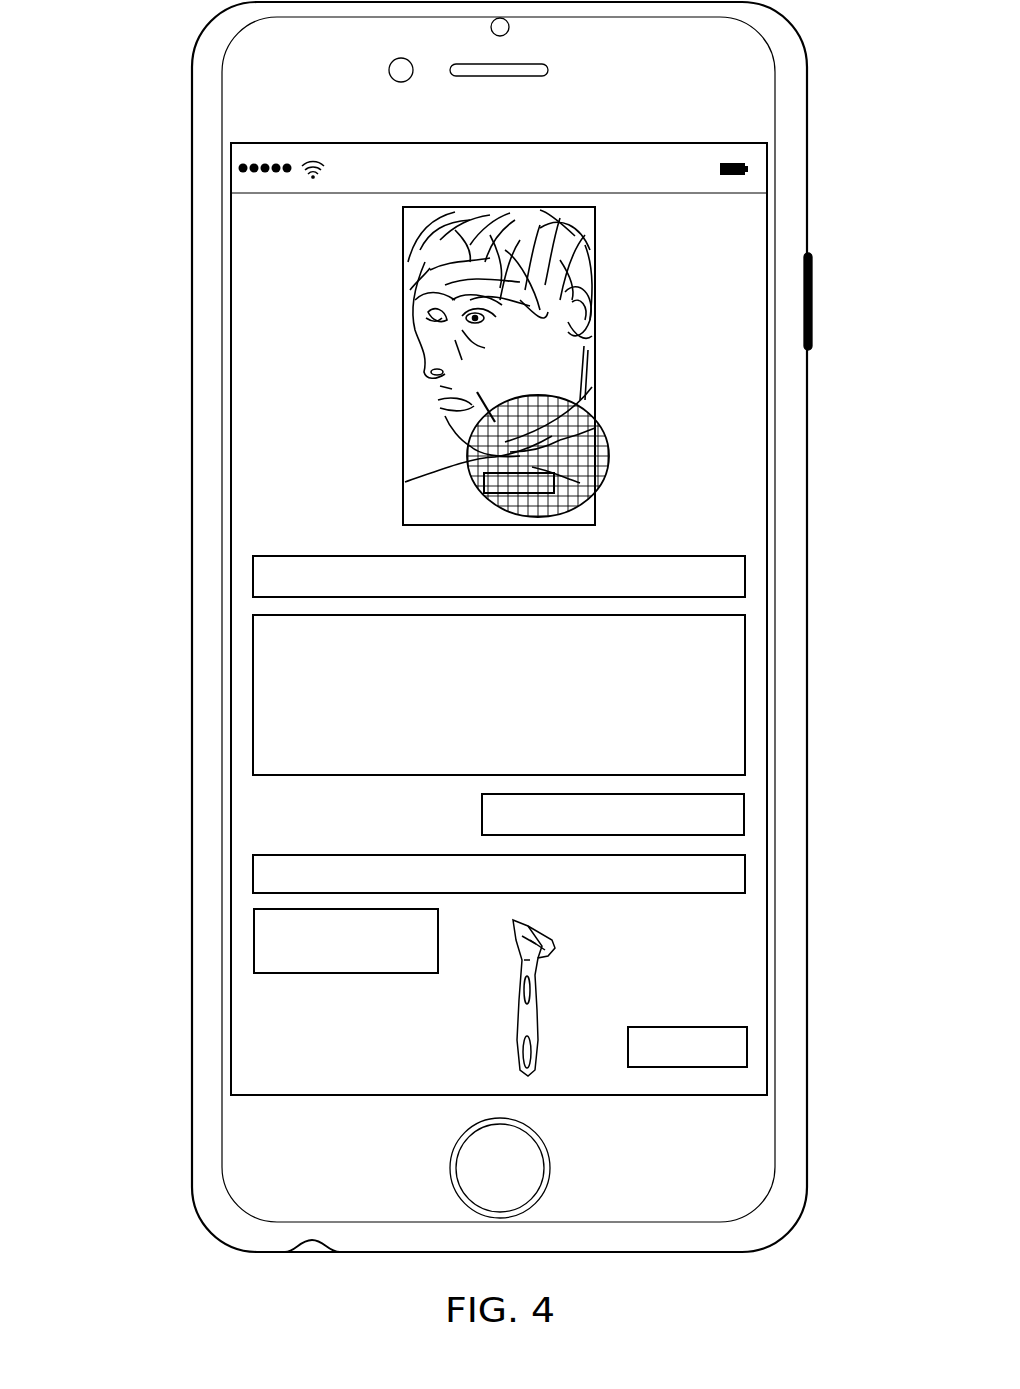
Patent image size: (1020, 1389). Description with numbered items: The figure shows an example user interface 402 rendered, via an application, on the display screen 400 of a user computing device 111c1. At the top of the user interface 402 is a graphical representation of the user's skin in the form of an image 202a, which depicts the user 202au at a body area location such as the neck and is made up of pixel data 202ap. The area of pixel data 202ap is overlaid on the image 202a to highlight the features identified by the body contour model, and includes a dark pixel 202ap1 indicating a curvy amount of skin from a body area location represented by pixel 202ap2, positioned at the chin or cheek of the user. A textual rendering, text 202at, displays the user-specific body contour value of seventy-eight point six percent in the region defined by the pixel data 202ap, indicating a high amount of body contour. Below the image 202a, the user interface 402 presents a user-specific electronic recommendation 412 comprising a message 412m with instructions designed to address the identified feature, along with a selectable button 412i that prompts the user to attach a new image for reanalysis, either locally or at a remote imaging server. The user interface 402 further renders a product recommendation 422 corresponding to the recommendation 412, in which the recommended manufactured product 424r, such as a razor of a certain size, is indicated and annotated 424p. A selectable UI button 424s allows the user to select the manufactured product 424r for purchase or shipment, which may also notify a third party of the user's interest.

The user computing device 111c1 is at (166, 46).
The display screen 400 is at (767, 170).
The user interface 402 is at (755, 213).
The image 202a is at (403, 368).
The user 202au is at (578, 240).
The pixel data 202ap is at (598, 436).
The pixel 202ap1 is at (532, 467).
The pixel 202ap2 is at (560, 440).
The text 202at is at (484, 483).
The user-specific electronic recommendation 412 is at (253, 577).
The message 412m is at (253, 693).
The selectable button 412i is at (482, 815).
The product recommendation 422 is at (253, 870).
The annotation of recommended product 424p is at (346, 973).
The manufactured product 424r is at (517, 1015).
The selectable UI button 424s is at (685, 1027).